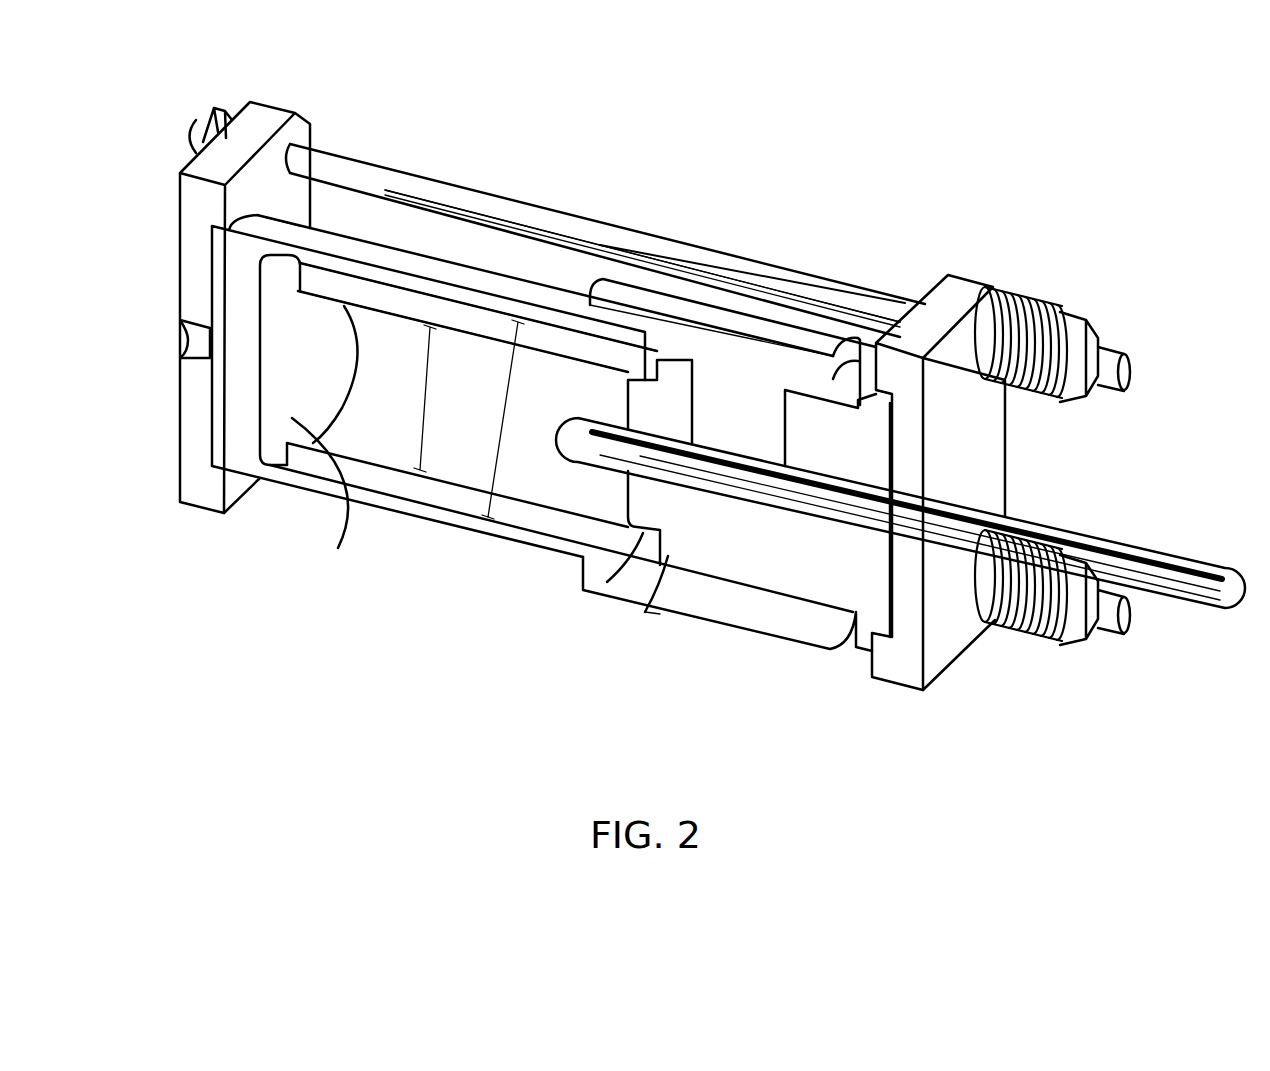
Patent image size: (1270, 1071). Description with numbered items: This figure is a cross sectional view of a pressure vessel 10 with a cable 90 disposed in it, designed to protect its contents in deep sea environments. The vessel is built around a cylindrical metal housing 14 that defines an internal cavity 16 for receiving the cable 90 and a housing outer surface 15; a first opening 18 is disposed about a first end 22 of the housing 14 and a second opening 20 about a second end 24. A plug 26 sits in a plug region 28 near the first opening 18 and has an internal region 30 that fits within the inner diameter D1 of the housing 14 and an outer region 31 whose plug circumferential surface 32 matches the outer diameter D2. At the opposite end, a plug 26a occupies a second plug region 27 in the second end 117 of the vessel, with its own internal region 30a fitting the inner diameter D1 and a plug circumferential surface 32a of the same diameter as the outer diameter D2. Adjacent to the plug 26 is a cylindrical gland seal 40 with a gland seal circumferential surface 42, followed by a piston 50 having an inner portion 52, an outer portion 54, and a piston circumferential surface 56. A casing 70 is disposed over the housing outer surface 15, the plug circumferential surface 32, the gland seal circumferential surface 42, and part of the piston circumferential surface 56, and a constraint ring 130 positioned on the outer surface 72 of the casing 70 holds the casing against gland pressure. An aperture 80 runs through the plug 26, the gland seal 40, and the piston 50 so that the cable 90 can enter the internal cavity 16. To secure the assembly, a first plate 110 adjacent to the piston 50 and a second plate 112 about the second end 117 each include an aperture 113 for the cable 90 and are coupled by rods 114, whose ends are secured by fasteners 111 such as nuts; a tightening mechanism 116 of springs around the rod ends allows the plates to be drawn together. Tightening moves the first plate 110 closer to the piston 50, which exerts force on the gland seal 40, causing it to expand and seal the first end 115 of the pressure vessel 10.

The pressure vessel 10 is at (963, 168).
The housing 14 is at (403, 303).
The housing outer surface 15 is at (392, 258).
The internal cavity 16 is at (497, 367).
The first opening 18 is at (596, 508).
The second opening 20 is at (340, 310).
The first end 22 is at (645, 365).
The second end 24 is at (300, 268).
The plug 26 is at (677, 387).
The plug 26a is at (332, 500).
The second plug region 27 is at (312, 232).
The plug region 28 is at (653, 390).
The internal region 30 is at (607, 587).
The internal region 30a is at (313, 357).
The outer region 31 is at (643, 604).
The plug circumferential surface 32 is at (664, 600).
The plug circumferential surface 32a is at (272, 472).
The gland seal 40 is at (774, 412).
The gland seal circumferential surface 42 is at (743, 580).
The piston 50 is at (870, 445).
The inner portion 52 is at (807, 400).
The outer portion 54 is at (902, 681).
The piston circumferential surface 56 is at (797, 637).
The casing 70 is at (235, 402).
The outer surface 72 is at (562, 303).
The aperture 80 is at (927, 499).
The cable 90 is at (1077, 537).
The first plate 110 is at (953, 292).
The fastener 111 is at (1107, 318).
The second plate 112 is at (188, 168).
The aperture 113 is at (927, 545).
The rod 114 is at (533, 197).
The first end 115 is at (938, 710).
The tightening mechanism 116 is at (1057, 302).
The second end 117 is at (185, 520).
The constraint ring 130 is at (762, 320).
The inner diameter D1 is at (421, 410).
The outer diameter D2 is at (502, 415).